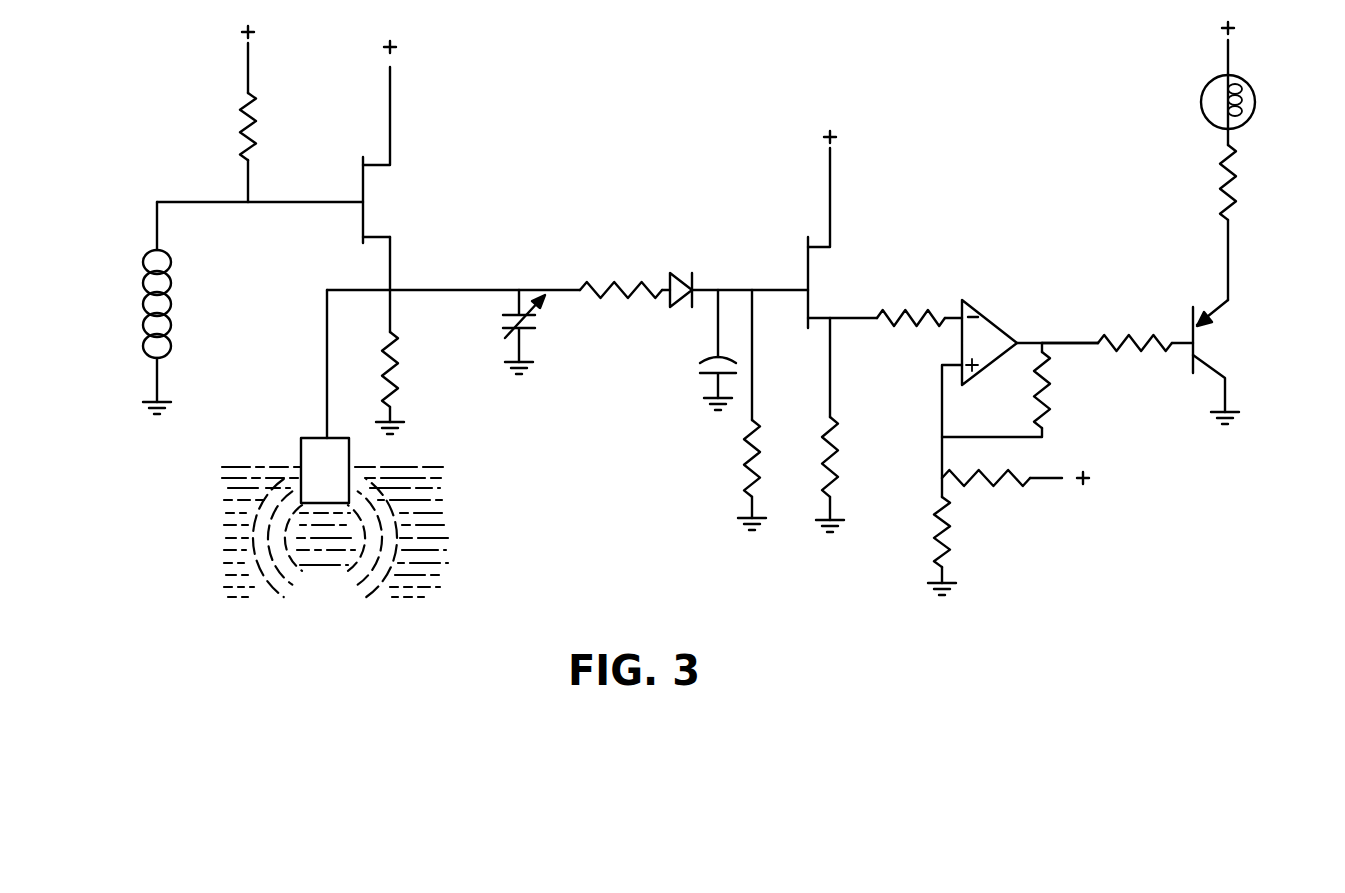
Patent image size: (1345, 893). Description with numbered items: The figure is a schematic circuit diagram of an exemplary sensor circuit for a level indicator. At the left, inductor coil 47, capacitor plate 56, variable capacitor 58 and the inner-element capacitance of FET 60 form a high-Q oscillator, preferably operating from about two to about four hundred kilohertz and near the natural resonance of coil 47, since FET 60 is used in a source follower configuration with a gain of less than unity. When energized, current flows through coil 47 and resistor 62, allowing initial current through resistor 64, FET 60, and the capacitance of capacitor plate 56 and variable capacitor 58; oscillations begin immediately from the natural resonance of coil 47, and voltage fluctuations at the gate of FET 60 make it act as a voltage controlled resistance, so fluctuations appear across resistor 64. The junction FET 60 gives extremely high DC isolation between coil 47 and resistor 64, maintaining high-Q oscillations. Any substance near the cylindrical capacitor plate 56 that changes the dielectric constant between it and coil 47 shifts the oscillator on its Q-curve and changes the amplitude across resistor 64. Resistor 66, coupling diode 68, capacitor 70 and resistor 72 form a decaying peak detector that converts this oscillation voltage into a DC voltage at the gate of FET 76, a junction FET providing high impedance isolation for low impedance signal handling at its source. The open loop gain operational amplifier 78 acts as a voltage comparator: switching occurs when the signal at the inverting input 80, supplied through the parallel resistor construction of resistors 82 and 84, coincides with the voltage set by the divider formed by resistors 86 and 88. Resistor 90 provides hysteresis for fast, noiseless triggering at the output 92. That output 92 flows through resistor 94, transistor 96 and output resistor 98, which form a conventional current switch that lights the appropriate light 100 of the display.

The inductor coil 47 is at (145, 296).
The capacitor plate 56 is at (301, 445).
The variable capacitor 58 is at (543, 333).
The FET 60 is at (385, 200).
The resistor 62 is at (246, 104).
The resistor 64 is at (400, 373).
The resistor 66 is at (613, 283).
The coupling diode 68 is at (682, 275).
The capacitor 70 is at (696, 360).
The resistor 72 is at (765, 455).
The FET 76 is at (815, 263).
The operational amplifier 78 is at (993, 312).
The inverting input 80 is at (963, 300).
The resistor 82 is at (900, 320).
The resistor 84 is at (840, 455).
The resistor 86 is at (1005, 485).
The resistor 88 is at (955, 535).
The resistor 90 is at (1050, 400).
The output 92 is at (1068, 330).
The resistor 94 is at (1140, 355).
The transistor 96 is at (1218, 338).
The output resistor 98 is at (1240, 190).
The light 100 is at (1256, 98).